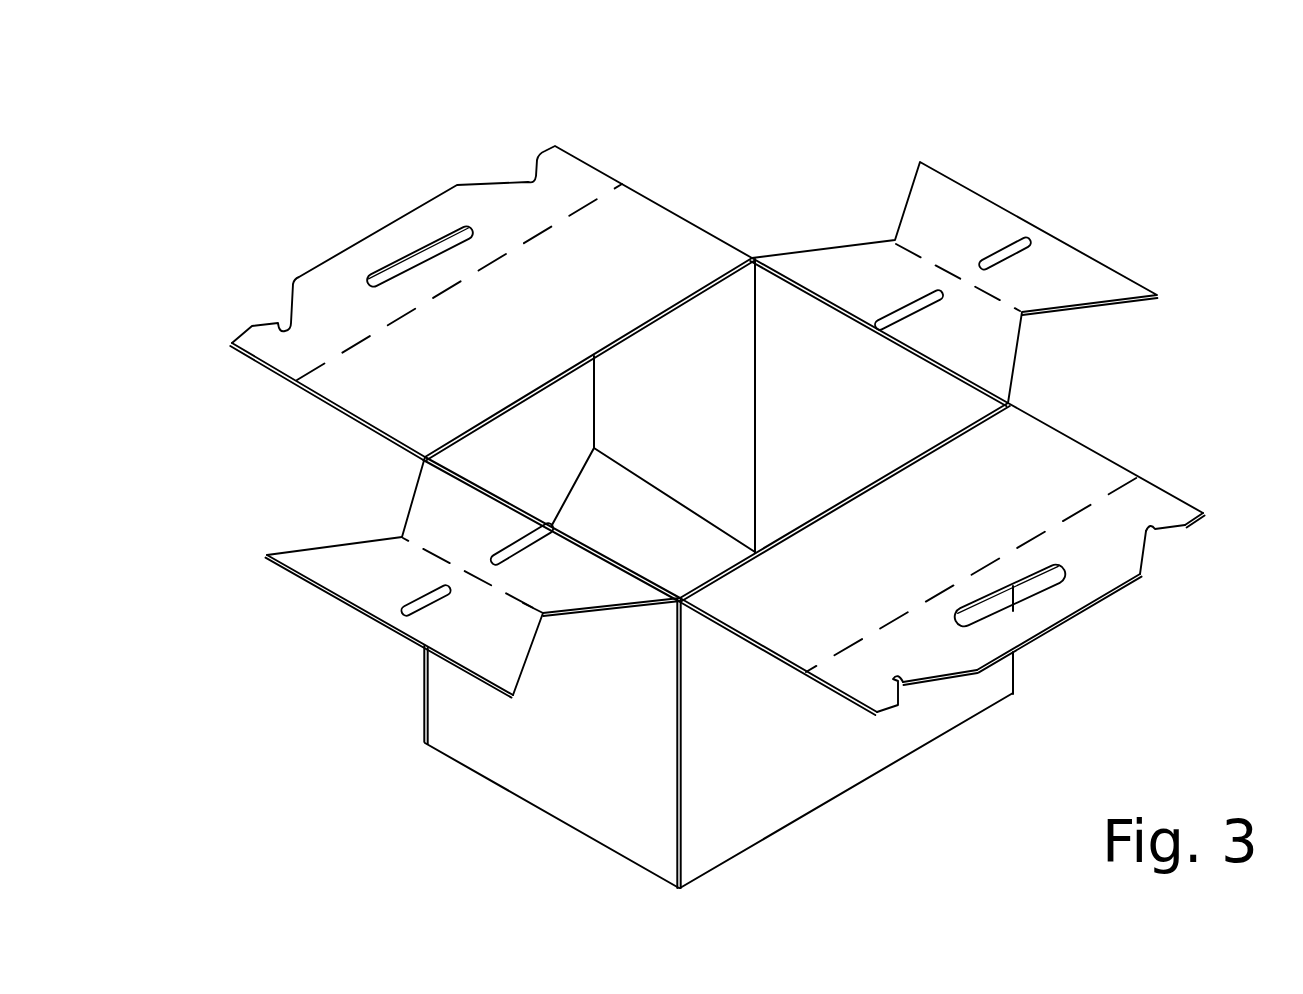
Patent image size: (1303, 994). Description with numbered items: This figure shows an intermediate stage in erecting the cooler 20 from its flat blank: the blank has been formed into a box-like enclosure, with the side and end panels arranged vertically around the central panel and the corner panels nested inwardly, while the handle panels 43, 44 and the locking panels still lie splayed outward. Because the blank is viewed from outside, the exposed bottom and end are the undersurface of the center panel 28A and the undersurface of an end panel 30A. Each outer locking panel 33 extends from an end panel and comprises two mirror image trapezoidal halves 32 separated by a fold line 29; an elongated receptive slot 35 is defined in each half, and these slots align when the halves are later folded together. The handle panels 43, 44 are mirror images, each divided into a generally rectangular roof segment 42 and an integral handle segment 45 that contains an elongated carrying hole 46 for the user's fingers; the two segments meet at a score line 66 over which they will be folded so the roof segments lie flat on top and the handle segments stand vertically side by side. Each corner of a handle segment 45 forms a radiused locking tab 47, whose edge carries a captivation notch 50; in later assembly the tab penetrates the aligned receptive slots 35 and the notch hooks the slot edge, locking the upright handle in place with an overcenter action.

The cooler 20 is at (870, 132).
The undersurface of center panel 28A is at (783, 760).
The undersurface of end panel 30A is at (545, 775).
The fold line 29 is at (505, 596).
The trapezoidal half 32 is at (370, 583).
The outer locking panel 33 is at (370, 500).
The receptive slot 35 is at (1005, 247).
The roof segment 42 is at (358, 383).
The handle panel 43 is at (305, 230).
The handle panel 44 is at (1094, 482).
The handle segment 45 is at (1100, 562).
The carrying hole 46 is at (422, 258).
The locking tab 47 is at (1167, 510).
The captivation notch 50 is at (893, 676).
The score line 66 is at (957, 583).